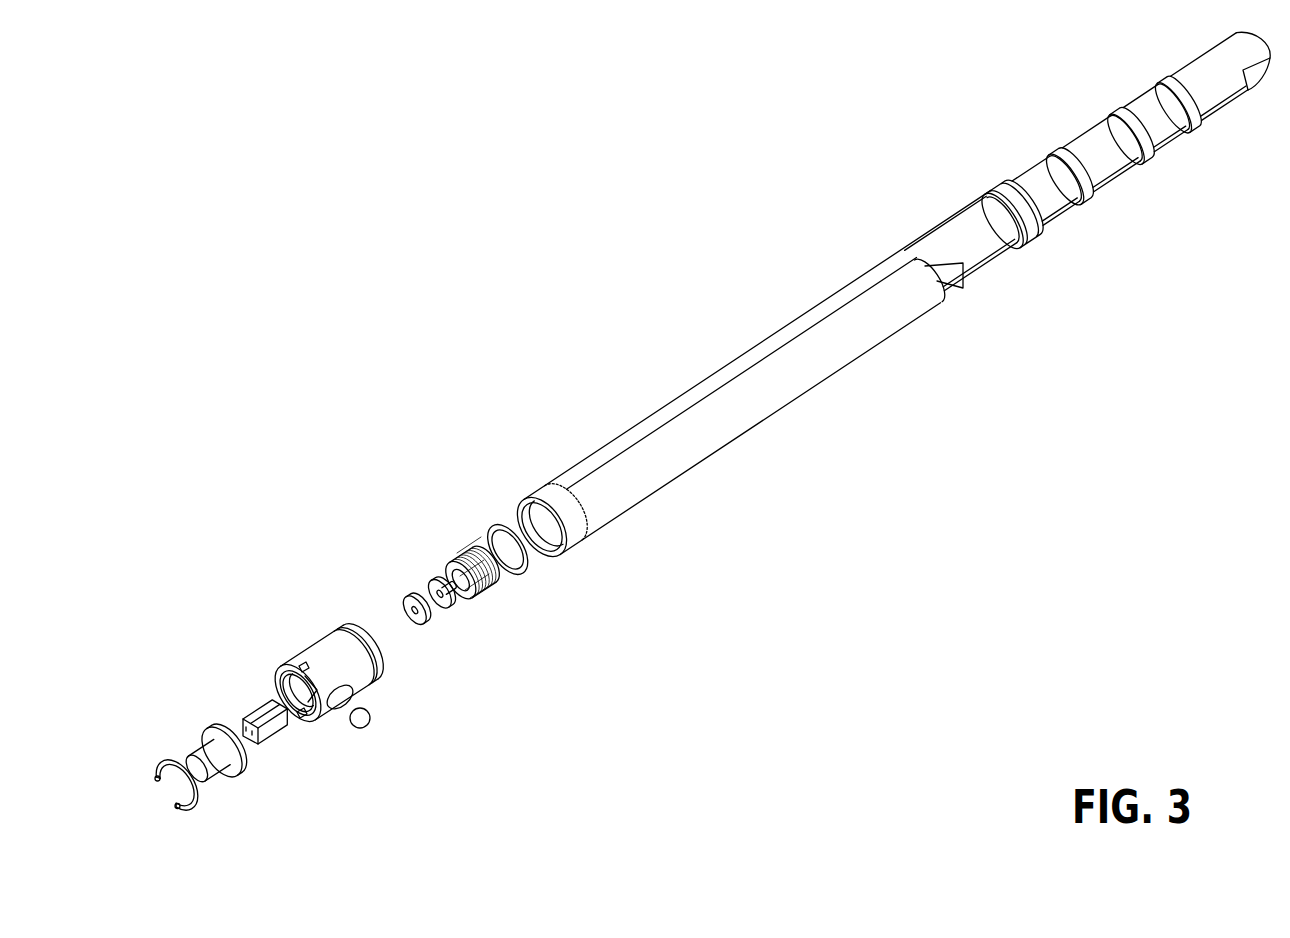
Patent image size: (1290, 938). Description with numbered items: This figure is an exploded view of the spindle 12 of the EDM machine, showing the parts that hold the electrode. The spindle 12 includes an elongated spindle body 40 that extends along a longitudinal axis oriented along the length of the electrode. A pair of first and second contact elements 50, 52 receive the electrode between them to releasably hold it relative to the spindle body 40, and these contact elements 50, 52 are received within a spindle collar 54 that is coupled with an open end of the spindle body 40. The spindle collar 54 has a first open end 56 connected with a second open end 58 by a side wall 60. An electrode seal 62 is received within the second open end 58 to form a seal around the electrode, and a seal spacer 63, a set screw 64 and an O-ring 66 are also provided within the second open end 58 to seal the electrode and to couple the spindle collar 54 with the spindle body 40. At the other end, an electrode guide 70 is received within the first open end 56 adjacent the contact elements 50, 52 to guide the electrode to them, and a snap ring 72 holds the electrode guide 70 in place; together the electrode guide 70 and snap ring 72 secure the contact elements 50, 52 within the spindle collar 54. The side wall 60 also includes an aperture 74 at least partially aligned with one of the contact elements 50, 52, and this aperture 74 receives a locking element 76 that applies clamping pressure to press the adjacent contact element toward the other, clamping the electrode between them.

The spindle 12 is at (636, 397).
The spindle body 40 is at (741, 412).
The first contact element 50 is at (242, 716).
The second contact element 52 is at (274, 728).
The spindle collar 54 is at (297, 646).
The first open end 56 is at (266, 669).
The second open end 58 is at (361, 619).
The side wall 60 is at (316, 646).
The electrode seal 62 is at (449, 607).
The seal spacer 63 is at (403, 596).
The set screw 64 is at (491, 589).
The O-ring 66 is at (497, 526).
The electrode guide 70 is at (209, 737).
The snap ring 72 is at (184, 812).
The aperture 74 is at (331, 716).
The locking element 76 is at (371, 720).